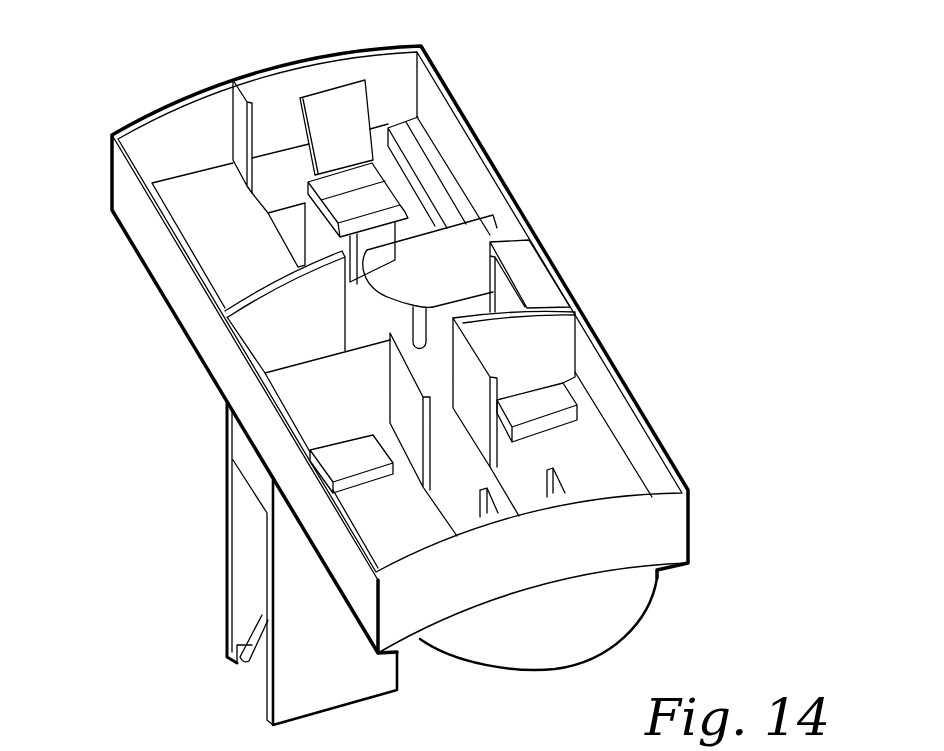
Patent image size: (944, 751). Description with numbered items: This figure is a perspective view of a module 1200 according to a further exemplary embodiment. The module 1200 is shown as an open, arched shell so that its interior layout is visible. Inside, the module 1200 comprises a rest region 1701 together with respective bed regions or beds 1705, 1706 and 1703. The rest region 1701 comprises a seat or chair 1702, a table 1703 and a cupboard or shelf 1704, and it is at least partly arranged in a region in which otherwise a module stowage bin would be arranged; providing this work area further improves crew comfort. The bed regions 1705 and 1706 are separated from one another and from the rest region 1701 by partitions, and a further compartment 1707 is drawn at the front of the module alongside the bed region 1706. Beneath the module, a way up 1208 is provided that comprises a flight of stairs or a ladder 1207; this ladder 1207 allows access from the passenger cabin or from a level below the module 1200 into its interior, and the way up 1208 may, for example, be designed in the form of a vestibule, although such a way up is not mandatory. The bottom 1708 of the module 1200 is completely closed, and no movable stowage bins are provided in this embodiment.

The module 1200 is at (152, 477).
The ladder 1207 is at (252, 668).
The way up 1208 is at (348, 693).
The rest region 1701 is at (433, 152).
The seat 1702 is at (316, 116).
The table 1703 is at (493, 232).
The shelf 1704 is at (535, 275).
The bed region 1705 is at (172, 197).
The bed region 1706 is at (393, 537).
The front right compartment 1707 is at (597, 448).
The bottom 1708 is at (640, 622).